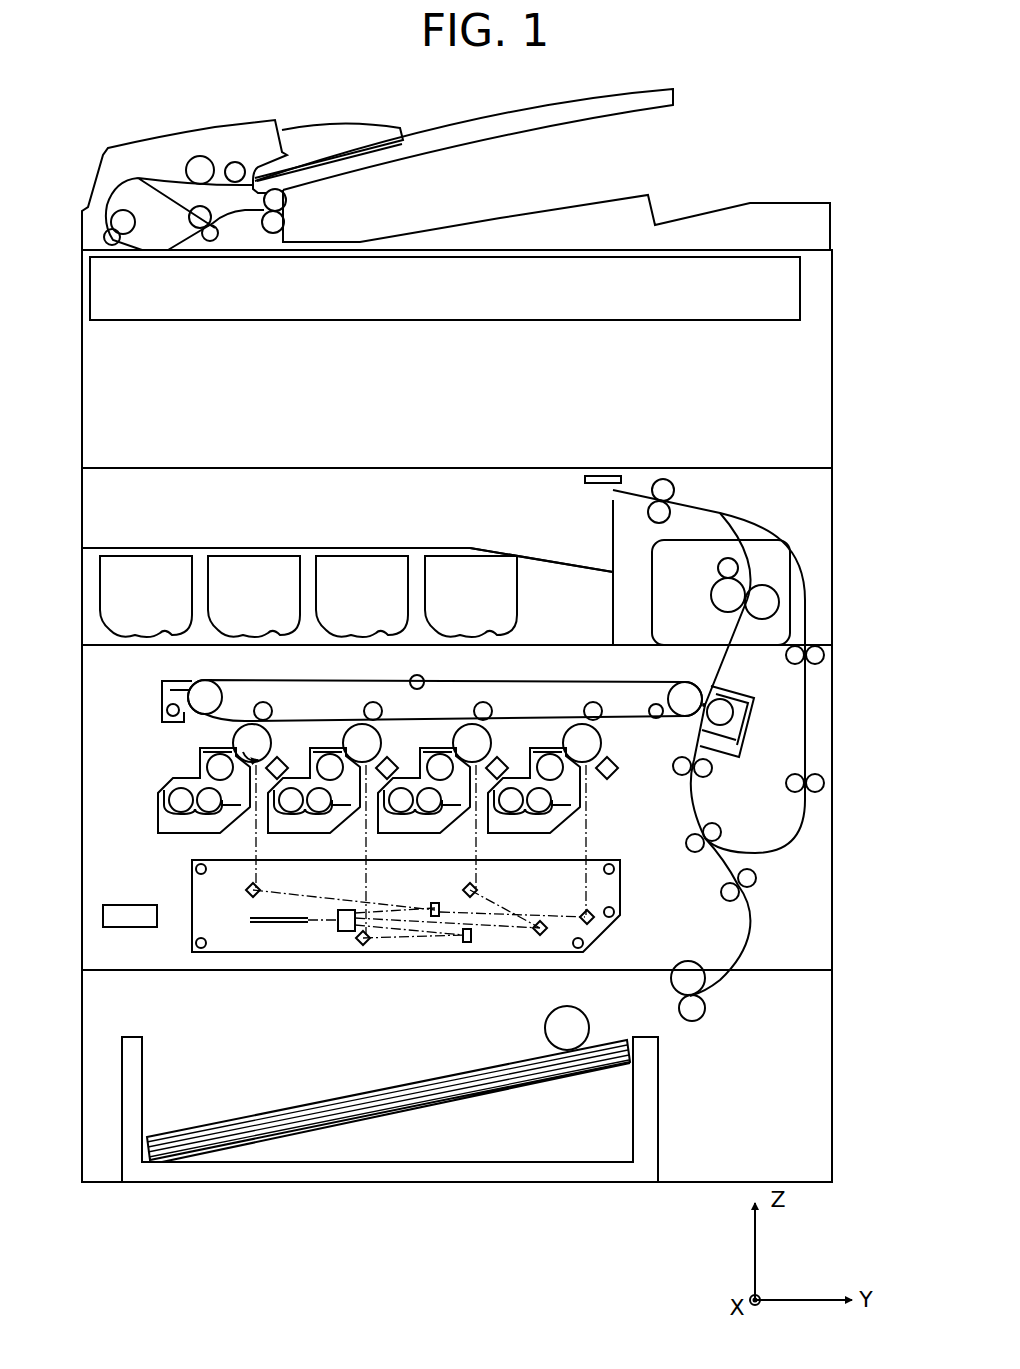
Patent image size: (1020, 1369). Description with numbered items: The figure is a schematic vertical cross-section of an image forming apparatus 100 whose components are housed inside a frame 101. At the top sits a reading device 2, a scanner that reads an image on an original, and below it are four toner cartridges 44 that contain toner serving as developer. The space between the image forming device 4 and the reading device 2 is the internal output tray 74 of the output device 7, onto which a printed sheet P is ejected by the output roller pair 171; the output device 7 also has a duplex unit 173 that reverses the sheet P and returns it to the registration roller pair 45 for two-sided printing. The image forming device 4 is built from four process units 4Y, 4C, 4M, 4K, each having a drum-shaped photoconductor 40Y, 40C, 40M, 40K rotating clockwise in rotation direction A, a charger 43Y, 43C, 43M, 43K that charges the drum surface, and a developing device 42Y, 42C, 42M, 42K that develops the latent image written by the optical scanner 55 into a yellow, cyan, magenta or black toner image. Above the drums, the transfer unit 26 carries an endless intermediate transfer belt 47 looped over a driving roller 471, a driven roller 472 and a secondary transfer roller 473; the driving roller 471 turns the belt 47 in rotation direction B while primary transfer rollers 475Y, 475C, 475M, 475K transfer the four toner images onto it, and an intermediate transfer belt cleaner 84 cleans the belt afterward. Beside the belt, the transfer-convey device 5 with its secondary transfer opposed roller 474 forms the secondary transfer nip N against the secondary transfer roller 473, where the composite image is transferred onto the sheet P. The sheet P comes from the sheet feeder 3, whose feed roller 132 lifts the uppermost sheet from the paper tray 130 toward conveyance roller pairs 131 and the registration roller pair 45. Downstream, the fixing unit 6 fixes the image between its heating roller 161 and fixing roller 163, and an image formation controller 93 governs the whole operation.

The reading device 2 is at (845, 232).
The image forming apparatus 100 is at (355, 104).
The frame 101 is at (833, 370).
The toner cartridge 44 is at (471, 567).
The internal output tray 74 is at (576, 520).
The output roller pair 171 is at (640, 488).
The duplex unit 173 is at (730, 496).
The output device 7 is at (737, 571).
The fixing unit 6 is at (716, 574).
The fixing roller 163 is at (708, 600).
The heating roller 161 is at (760, 595).
The transfer unit 26 is at (475, 677).
The intermediate transfer belt 47 is at (232, 718).
The driving roller 471 is at (198, 683).
The driven roller 472 is at (410, 680).
The secondary transfer roller 473 is at (650, 708).
The secondary transfer opposed roller 474 is at (745, 714).
The primary transfer roller 475Y is at (263, 702).
The primary transfer roller 475C is at (370, 703).
The primary transfer roller 475M is at (480, 703).
The primary transfer roller 475K is at (586, 706).
The secondary transfer nip N is at (725, 690).
The rotation direction B is at (453, 663).
The rotation direction A is at (234, 744).
The intermediate transfer belt cleaner 84 is at (148, 703).
The transfer-convey device 5 is at (745, 757).
The registration roller pair 45 is at (705, 790).
The conveyance roller pair 131 is at (694, 853).
The image forming device 4 is at (377, 810).
The process unit 4Y is at (236, 804).
The process unit 4C is at (348, 810).
The process unit 4M is at (459, 787).
The process unit 4K is at (573, 818).
The photoconductor 40Y is at (212, 743).
The photoconductor 40C is at (344, 731).
The photoconductor 40M is at (455, 732).
The photoconductor 40K is at (600, 745).
The developing device 42Y is at (165, 834).
The developing device 42C is at (275, 834).
The developing device 42M is at (385, 834).
The developing device 42K is at (495, 834).
The charger 43Y is at (283, 762).
The charger 43C is at (393, 762).
The charger 43M is at (503, 762).
The charger 43K is at (612, 782).
The optical scanner 55 is at (602, 930).
The image formation controller 93 is at (132, 903).
The sheet feeder 3 is at (420, 1080).
The paper tray 130 is at (660, 1082).
The feed roller 132 is at (547, 1030).
The sheet P is at (355, 1093).